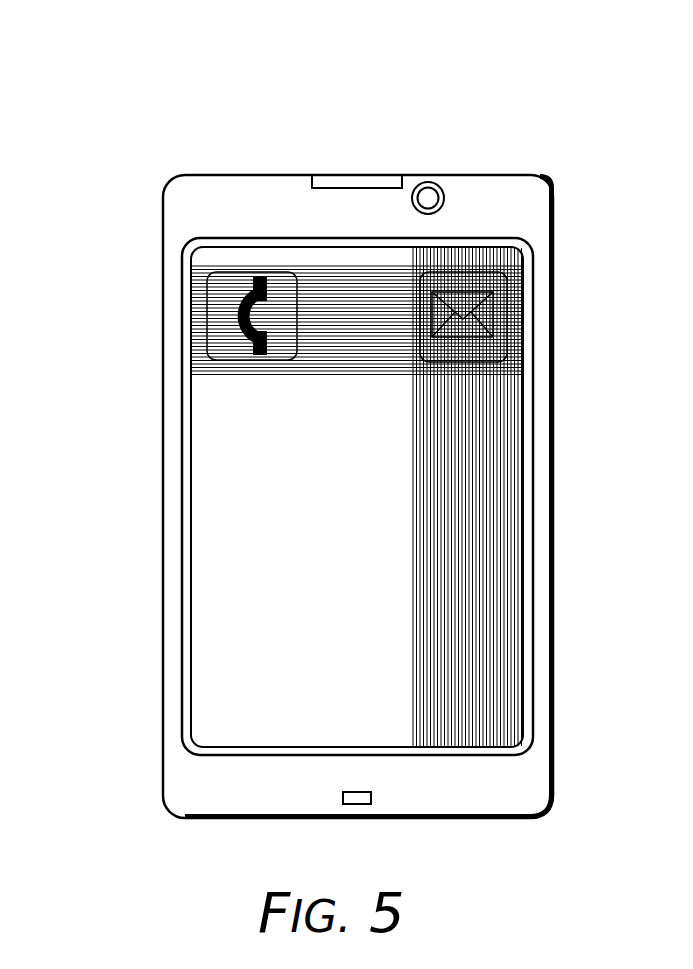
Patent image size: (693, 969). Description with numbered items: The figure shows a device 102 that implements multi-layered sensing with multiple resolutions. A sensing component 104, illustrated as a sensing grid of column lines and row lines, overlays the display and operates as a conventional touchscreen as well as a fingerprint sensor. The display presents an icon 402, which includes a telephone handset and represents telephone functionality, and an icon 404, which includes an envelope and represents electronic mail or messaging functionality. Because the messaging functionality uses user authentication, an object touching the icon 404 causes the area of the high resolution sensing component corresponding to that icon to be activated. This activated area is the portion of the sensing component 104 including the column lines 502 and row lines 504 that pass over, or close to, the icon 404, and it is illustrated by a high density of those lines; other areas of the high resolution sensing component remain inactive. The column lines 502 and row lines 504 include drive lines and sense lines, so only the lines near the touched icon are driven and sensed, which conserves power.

The device 102 is at (568, 146).
The sensing component 104 is at (197, 227).
The icon 402 is at (208, 278).
The icon 404 is at (507, 294).
The column lines 502 is at (518, 763).
The row lines 504 is at (155, 263).